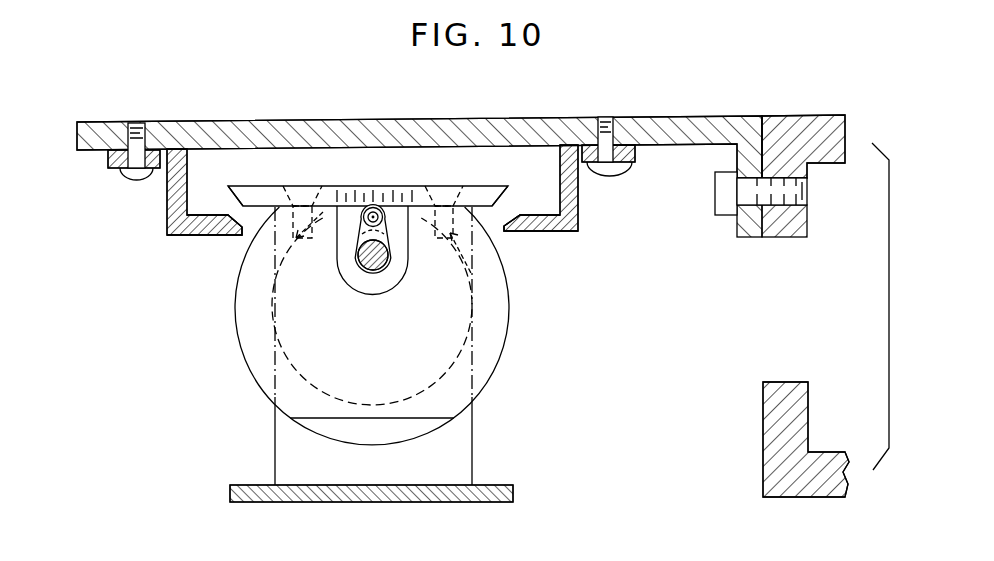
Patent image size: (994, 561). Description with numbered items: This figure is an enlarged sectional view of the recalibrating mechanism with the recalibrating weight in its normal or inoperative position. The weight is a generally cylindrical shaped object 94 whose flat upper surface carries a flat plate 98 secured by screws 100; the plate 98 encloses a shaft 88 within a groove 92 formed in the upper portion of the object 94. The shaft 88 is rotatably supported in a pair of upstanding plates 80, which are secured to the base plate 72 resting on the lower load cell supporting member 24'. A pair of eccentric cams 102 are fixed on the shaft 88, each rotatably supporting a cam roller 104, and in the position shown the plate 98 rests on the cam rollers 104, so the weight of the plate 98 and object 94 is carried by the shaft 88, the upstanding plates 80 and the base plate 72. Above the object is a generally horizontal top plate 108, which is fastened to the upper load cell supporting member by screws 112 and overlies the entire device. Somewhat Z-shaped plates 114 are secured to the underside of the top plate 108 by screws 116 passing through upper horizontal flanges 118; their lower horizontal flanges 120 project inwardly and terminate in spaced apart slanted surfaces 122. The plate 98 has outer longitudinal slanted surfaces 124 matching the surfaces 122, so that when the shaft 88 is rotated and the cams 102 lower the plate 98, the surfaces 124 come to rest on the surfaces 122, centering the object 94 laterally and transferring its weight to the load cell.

The top plate 108 is at (655, 115).
The flat plate 98 is at (332, 192).
The upper horizontal flange 118 is at (108, 157).
The screw 116 is at (135, 182).
The Z-shaped plate 114 is at (168, 215).
The lower horizontal flange 120 is at (188, 236).
The outer longitudinal slanted surface 124 is at (235, 197).
The cam roller 104 is at (375, 207).
The screw 100 is at (447, 183).
The slanted surface 122 is at (253, 230).
The eccentric cam 102 is at (393, 237).
The shaft 88 is at (378, 265).
The groove 92 is at (360, 289).
The generally cylindrical shaped object 94 is at (507, 347).
The upstanding plate 80 is at (475, 458).
The base plate 72 is at (353, 498).
The screw 112 is at (715, 206).
The lower load cell supporting member 24' is at (769, 439).